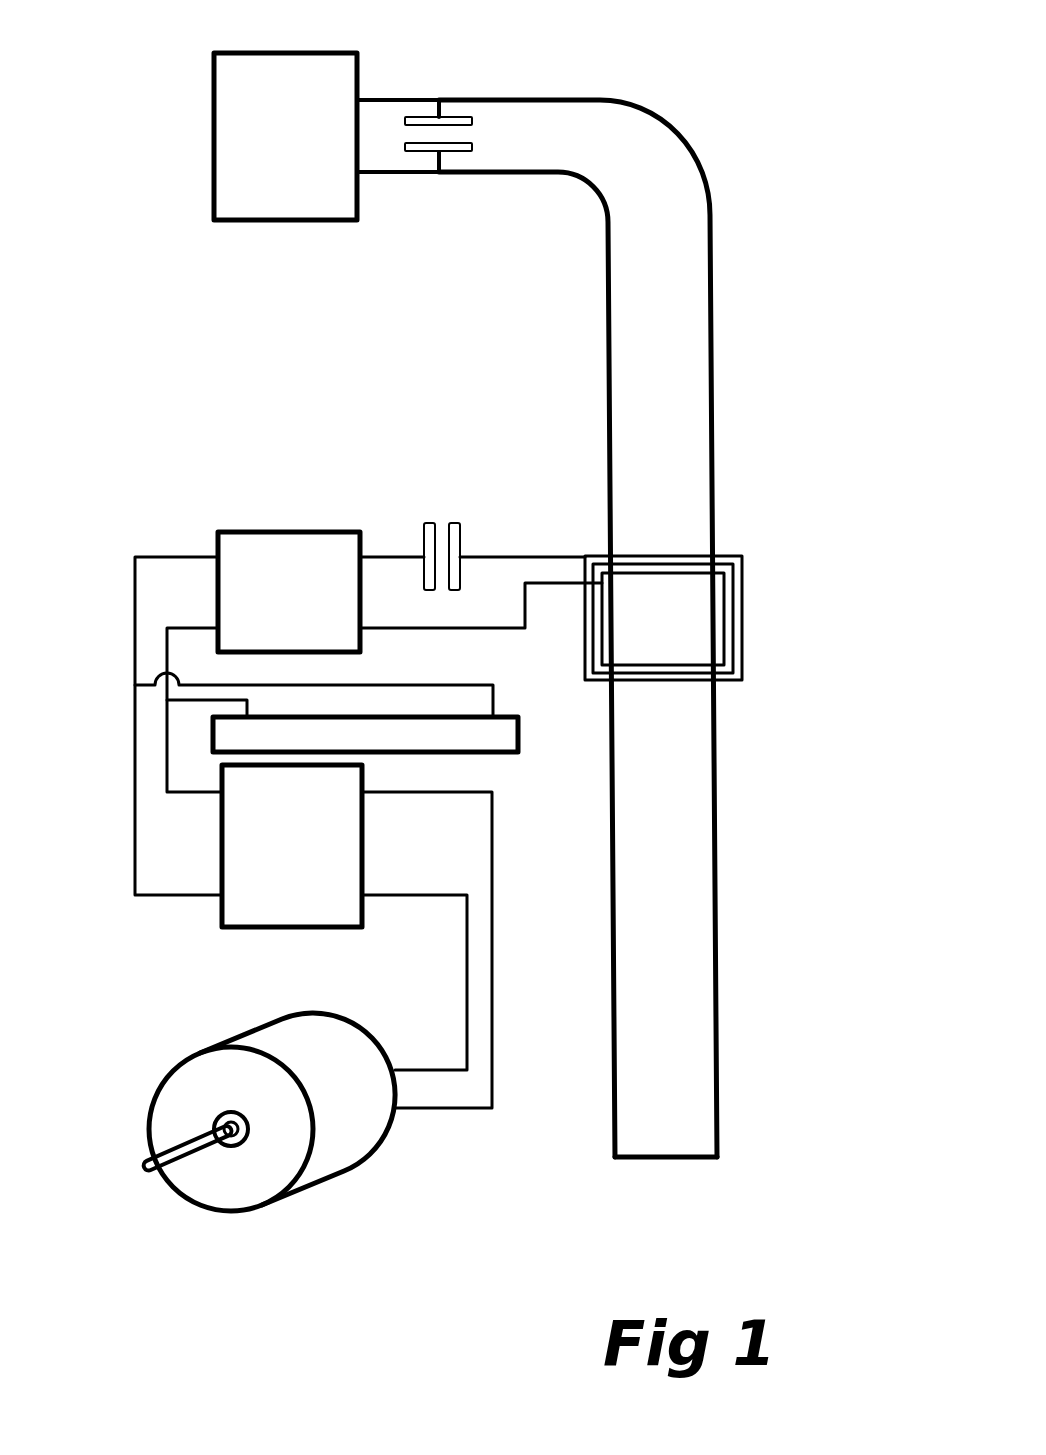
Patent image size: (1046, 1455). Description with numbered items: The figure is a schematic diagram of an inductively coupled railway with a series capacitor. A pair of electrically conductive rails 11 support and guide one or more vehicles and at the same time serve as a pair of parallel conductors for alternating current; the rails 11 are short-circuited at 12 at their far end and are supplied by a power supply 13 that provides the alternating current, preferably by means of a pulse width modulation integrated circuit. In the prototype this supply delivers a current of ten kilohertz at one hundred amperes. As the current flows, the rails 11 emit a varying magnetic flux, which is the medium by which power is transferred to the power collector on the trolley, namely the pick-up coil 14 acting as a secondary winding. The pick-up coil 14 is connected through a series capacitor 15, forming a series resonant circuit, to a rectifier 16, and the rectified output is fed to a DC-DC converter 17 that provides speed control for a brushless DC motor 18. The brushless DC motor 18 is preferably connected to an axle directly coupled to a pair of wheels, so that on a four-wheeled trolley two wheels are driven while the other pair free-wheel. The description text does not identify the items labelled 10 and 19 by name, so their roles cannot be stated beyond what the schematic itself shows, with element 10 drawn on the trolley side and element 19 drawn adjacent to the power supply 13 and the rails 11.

The sensor plate 10 is at (215, 717).
The rails 11 is at (497, 173).
The short circuit 12 is at (680, 1157).
The power supply 13 is at (242, 170).
The pick-up coil 14 is at (747, 557).
The series capacitor 15 is at (447, 465).
The rectifier 16 is at (332, 532).
The DC-DC converter 17 is at (252, 927).
The brushless DC motor 18 is at (330, 1173).
The capacitor 19 is at (473, 123).